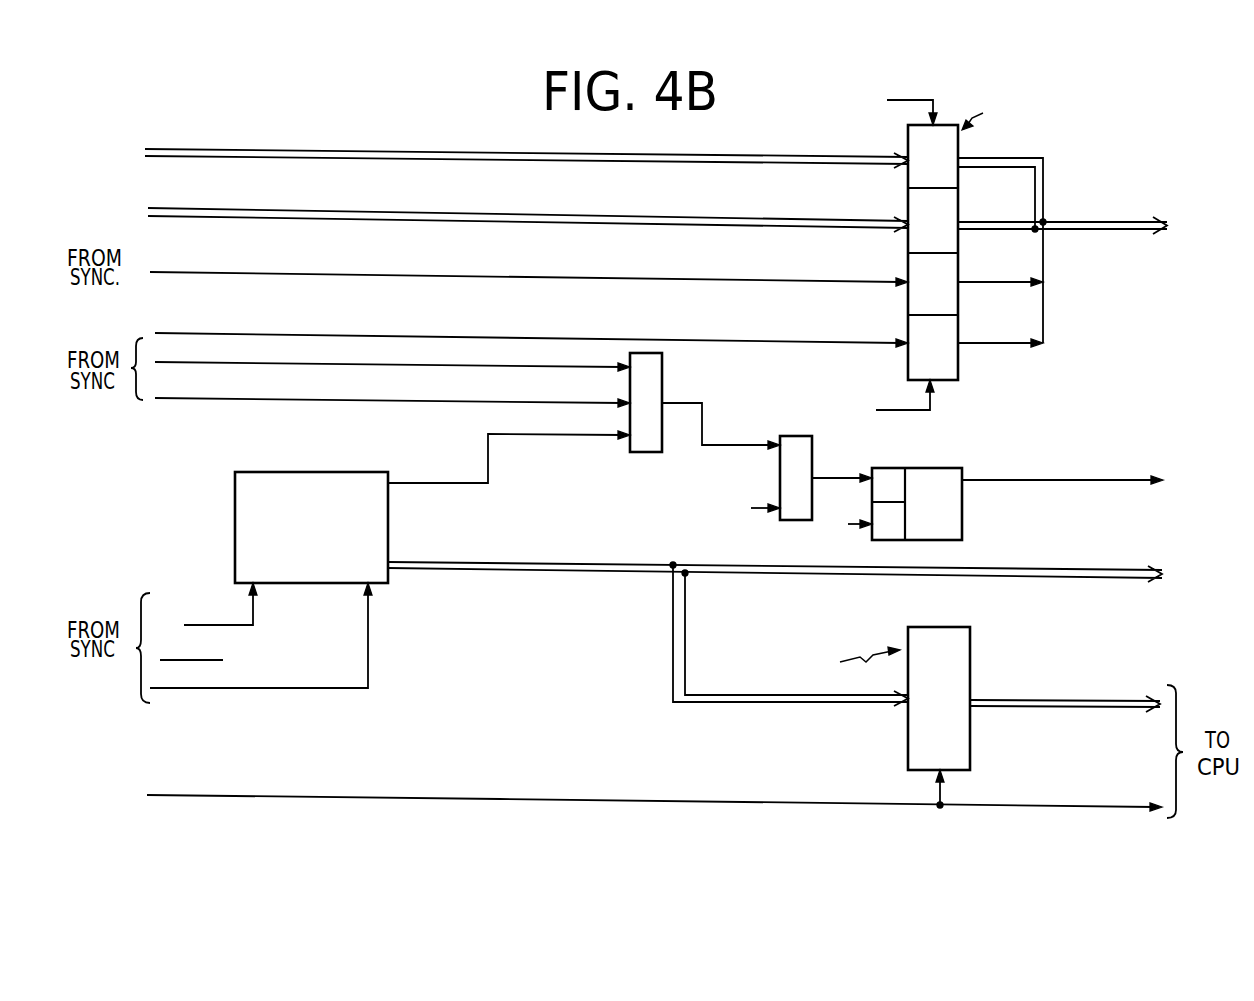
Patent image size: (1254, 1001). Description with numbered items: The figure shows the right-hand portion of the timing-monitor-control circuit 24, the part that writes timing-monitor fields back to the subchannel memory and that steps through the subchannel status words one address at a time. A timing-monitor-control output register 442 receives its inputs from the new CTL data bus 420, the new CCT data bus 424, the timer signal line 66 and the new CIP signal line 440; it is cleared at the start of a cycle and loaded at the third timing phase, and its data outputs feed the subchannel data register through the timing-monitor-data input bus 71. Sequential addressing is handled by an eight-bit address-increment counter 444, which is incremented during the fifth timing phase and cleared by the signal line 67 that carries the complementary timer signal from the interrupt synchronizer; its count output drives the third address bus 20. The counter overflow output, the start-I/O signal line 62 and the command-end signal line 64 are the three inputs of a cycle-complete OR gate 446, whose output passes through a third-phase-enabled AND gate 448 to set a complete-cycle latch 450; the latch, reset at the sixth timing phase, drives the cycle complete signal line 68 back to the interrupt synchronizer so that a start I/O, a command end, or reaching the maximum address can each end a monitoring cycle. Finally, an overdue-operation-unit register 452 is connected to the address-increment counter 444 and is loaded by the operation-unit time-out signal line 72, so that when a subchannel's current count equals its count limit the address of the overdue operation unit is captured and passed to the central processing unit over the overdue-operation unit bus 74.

The new CTL data bus 420 is at (582, 162).
The new CCT data bus 424 is at (589, 226).
The timer signal line 66 is at (602, 281).
The new CIP signal line 440 is at (732, 343).
The start-I/O signal line 62 is at (398, 365).
The command-end signal line 64 is at (364, 402).
The address-increment counter 444 is at (313, 469).
The signal line 67 is at (303, 690).
The cycle-complete OR gate 446 is at (662, 371).
The T3-enabled AND gate 448 is at (800, 436).
The complete-cycle latch 450 is at (950, 468).
The cycle complete signal line 68 is at (1104, 487).
The timing-monitor-control output register 442 is at (908, 132).
The timing-monitor-data input bus 71 is at (1057, 231).
The third address bus 20 is at (795, 577).
The overdue-operation-unit register 452 is at (972, 639).
The overdue-operation unit bus 74 is at (1105, 710).
The timing-monitor-control circuit 24 is at (295, 804).
The operation-unit time-out signal line 72 is at (583, 796).